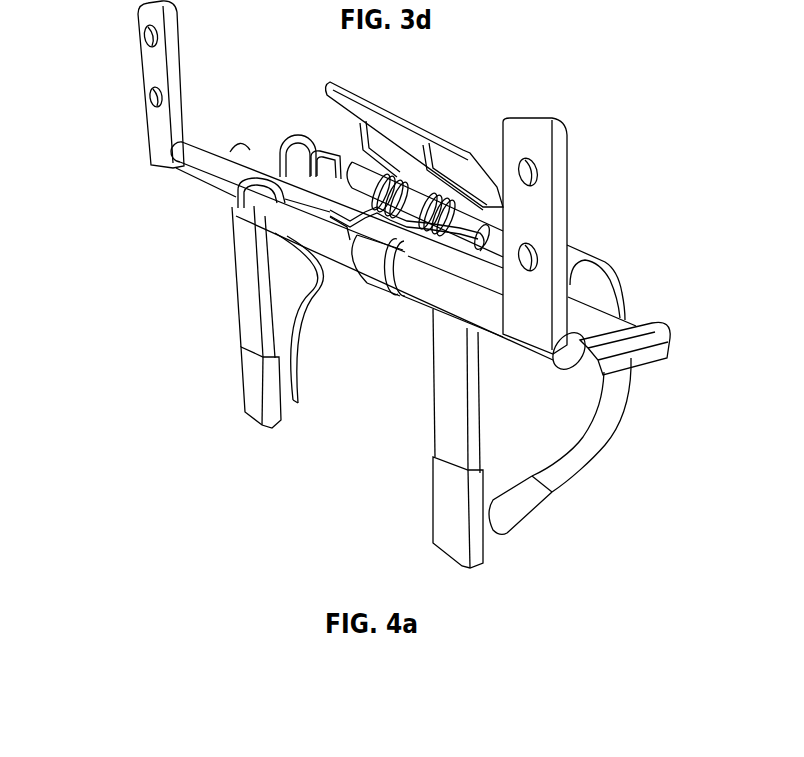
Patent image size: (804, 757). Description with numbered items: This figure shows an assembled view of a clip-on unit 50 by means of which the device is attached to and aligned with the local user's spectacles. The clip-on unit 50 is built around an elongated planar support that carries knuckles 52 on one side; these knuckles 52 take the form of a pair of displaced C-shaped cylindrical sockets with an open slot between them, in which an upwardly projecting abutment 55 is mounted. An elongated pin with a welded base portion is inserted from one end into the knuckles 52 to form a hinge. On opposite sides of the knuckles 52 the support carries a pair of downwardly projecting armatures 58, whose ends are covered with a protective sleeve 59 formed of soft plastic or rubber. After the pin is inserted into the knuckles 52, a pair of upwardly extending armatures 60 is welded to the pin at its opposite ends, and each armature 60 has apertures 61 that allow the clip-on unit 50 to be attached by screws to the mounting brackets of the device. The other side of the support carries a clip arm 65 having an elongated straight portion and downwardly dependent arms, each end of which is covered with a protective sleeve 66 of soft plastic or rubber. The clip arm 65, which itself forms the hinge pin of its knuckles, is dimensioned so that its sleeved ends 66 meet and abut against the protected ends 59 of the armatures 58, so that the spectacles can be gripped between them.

The clip-on unit 50 is at (542, 563).
The knuckles 52 is at (362, 280).
The abutment 55 is at (298, 213).
The armatures 58 is at (247, 283).
The protective sleeve 59 is at (280, 408).
The armatures 60 is at (143, 67).
The apertures 61 is at (143, 40).
The clip arm 65 is at (600, 455).
The protective sleeve 66 is at (533, 513).